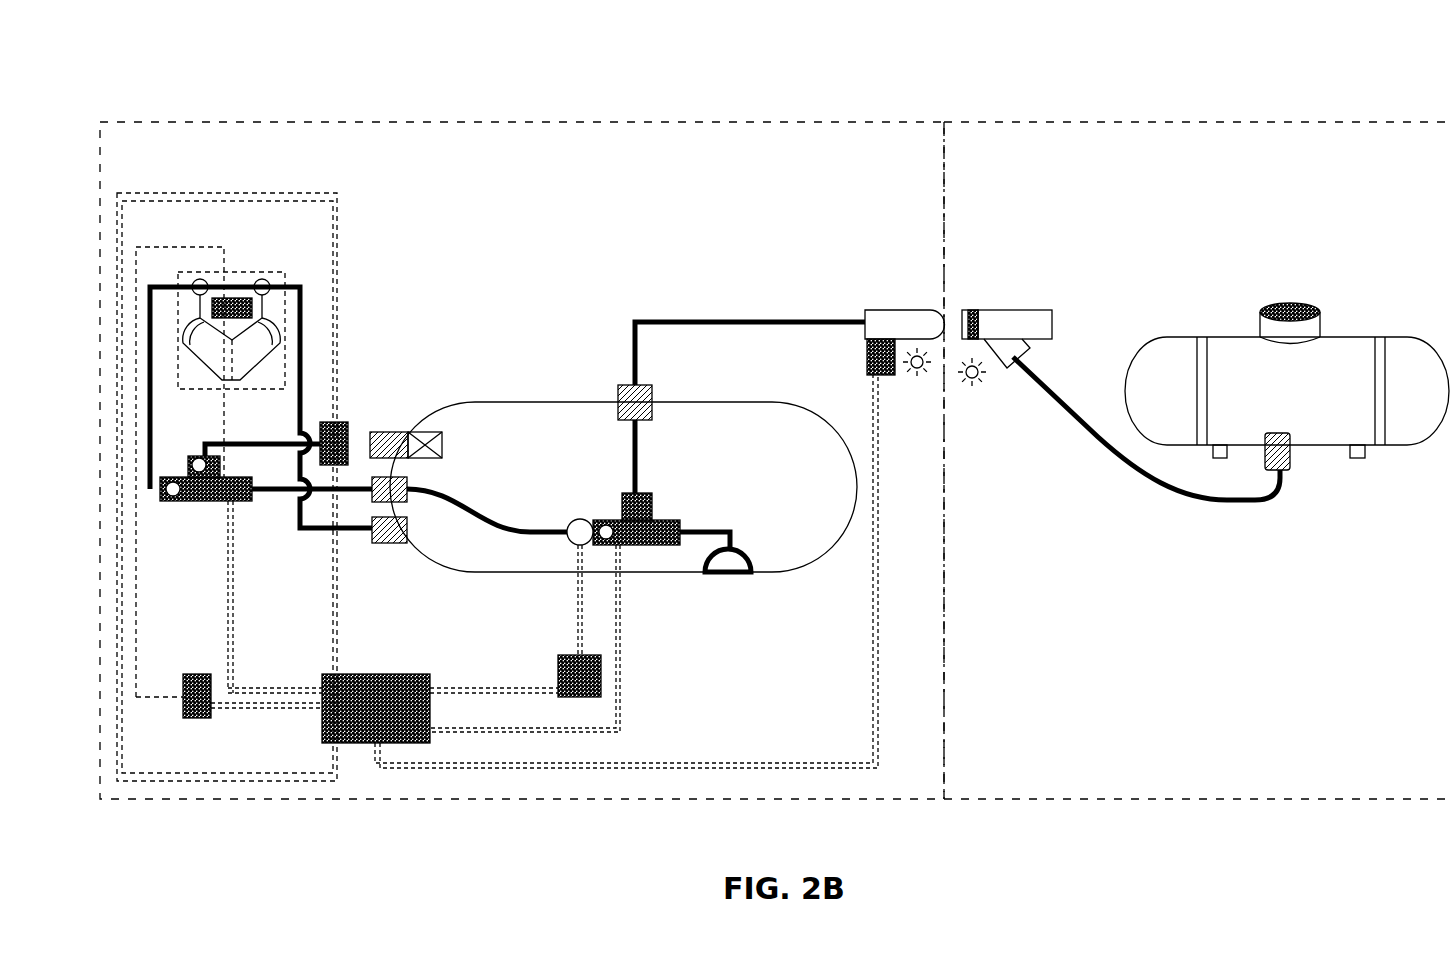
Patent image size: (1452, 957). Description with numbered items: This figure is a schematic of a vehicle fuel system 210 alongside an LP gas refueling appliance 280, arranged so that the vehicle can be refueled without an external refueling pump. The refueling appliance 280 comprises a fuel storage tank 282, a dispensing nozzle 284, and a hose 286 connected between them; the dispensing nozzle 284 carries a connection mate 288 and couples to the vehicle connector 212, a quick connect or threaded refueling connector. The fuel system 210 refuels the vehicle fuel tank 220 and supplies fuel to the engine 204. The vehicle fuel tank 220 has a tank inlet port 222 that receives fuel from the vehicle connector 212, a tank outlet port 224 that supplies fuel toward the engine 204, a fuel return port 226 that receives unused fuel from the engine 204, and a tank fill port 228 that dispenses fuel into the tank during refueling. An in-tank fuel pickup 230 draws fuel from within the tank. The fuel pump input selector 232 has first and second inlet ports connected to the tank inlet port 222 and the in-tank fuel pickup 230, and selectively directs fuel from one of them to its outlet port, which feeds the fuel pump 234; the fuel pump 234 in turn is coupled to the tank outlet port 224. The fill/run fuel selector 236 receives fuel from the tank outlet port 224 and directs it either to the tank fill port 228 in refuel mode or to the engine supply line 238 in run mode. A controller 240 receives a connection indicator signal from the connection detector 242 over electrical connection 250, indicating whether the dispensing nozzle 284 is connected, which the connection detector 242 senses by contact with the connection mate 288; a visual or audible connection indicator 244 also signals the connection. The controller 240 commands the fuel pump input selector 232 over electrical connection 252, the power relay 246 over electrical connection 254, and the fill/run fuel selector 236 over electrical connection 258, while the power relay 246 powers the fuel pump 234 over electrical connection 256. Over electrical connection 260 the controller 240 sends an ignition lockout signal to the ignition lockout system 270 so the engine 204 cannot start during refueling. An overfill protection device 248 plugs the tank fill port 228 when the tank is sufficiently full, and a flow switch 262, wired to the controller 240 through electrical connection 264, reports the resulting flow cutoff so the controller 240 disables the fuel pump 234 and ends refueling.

The engine 204 is at (273, 272).
The fuel system 210 is at (648, 122).
The vehicle connector 212 is at (910, 310).
The vehicle fuel tank 220 is at (498, 402).
The tank inlet port 222 is at (652, 400).
The tank outlet port 224 is at (400, 502).
The fuel return port 226 is at (400, 543).
The tank fill port 228 is at (386, 432).
The in-tank fuel pickup 230 is at (752, 562).
The fuel pump input selector 232 is at (652, 512).
The fuel pump 234 is at (572, 519).
The fill/run fuel selector 236 is at (176, 477).
The engine supply line 238 is at (303, 340).
The controller 240 is at (377, 674).
The connection detector 242 is at (867, 358).
The connection indicator 244 is at (965, 390).
The power relay 246 is at (558, 667).
The overfill protection device 248 is at (442, 446).
The electrical connection 250 is at (750, 763).
The electrical connection 252 is at (620, 640).
The electrical connection 254 is at (276, 688).
The electrical connection 256 is at (578, 602).
The electrical connection 258 is at (233, 580).
The electrical connection 260 is at (255, 708).
The flow switch 262 is at (332, 422).
The electrical connection 264 is at (337, 204).
The ignition lockout system 270 is at (197, 674).
The LP gas refueling appliance 280 is at (1201, 122).
The fuel storage tank 282 is at (1406, 337).
The dispensing nozzle 284 is at (1032, 310).
The hose 286 is at (1063, 420).
The connection mate 288 is at (972, 310).